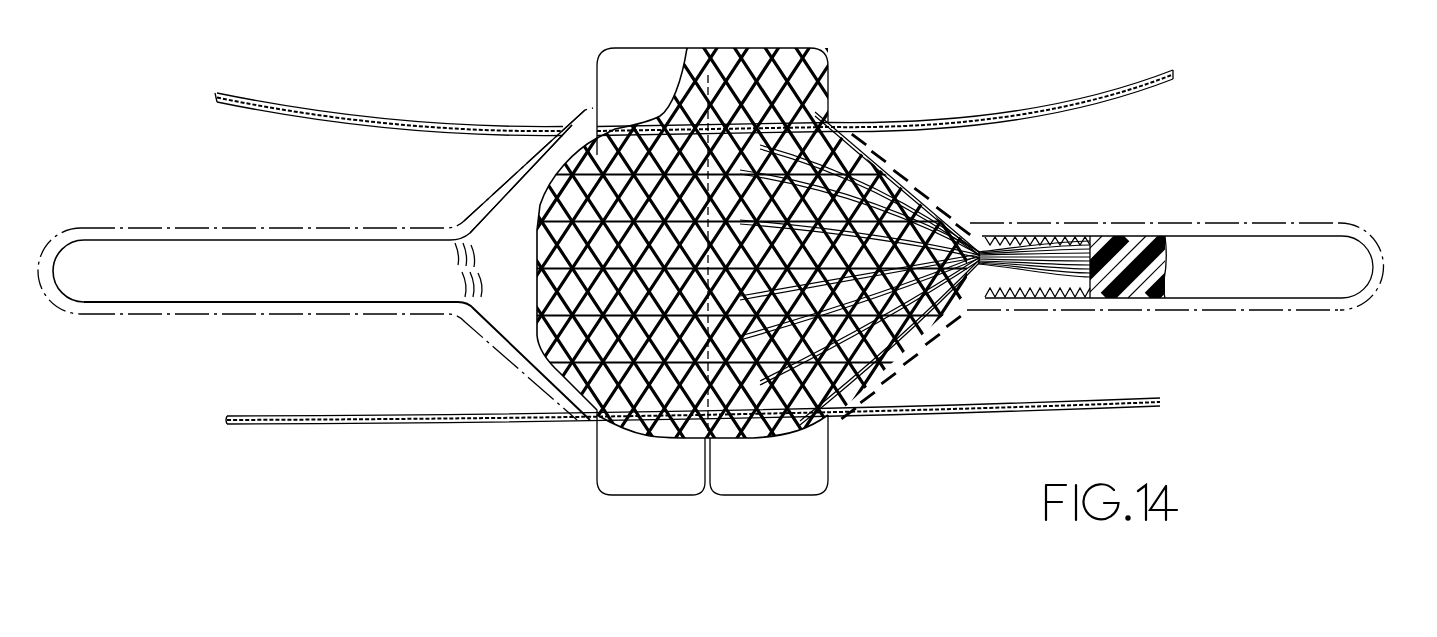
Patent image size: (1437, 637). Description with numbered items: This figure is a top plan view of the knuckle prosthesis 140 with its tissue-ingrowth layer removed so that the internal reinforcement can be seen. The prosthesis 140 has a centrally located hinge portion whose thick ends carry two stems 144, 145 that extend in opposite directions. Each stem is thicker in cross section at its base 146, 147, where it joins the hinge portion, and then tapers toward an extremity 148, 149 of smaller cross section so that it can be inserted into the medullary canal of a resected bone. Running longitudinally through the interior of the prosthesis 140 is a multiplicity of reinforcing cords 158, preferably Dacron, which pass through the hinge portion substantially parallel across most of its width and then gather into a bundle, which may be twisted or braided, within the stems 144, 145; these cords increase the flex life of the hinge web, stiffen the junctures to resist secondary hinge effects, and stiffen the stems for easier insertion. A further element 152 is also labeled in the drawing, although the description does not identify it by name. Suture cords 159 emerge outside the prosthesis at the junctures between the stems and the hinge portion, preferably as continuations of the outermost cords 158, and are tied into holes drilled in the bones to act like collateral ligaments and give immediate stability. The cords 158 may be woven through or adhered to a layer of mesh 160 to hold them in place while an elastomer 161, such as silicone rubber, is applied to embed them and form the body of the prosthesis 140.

The knuckle prosthesis 140 is at (578, 53).
The stem 144 is at (295, 238).
The stem 145 is at (1208, 233).
The base 146 is at (548, 174).
The base 147 is at (901, 187).
The extremity 148 is at (78, 257).
The extremity 149 is at (1360, 240).
The bottom mounting block 152 is at (708, 482).
The reinforcing cords 158 is at (880, 165).
The suture cords 159 is at (303, 110).
The mesh layer 160 is at (925, 327).
The elastomer 161 is at (1138, 283).